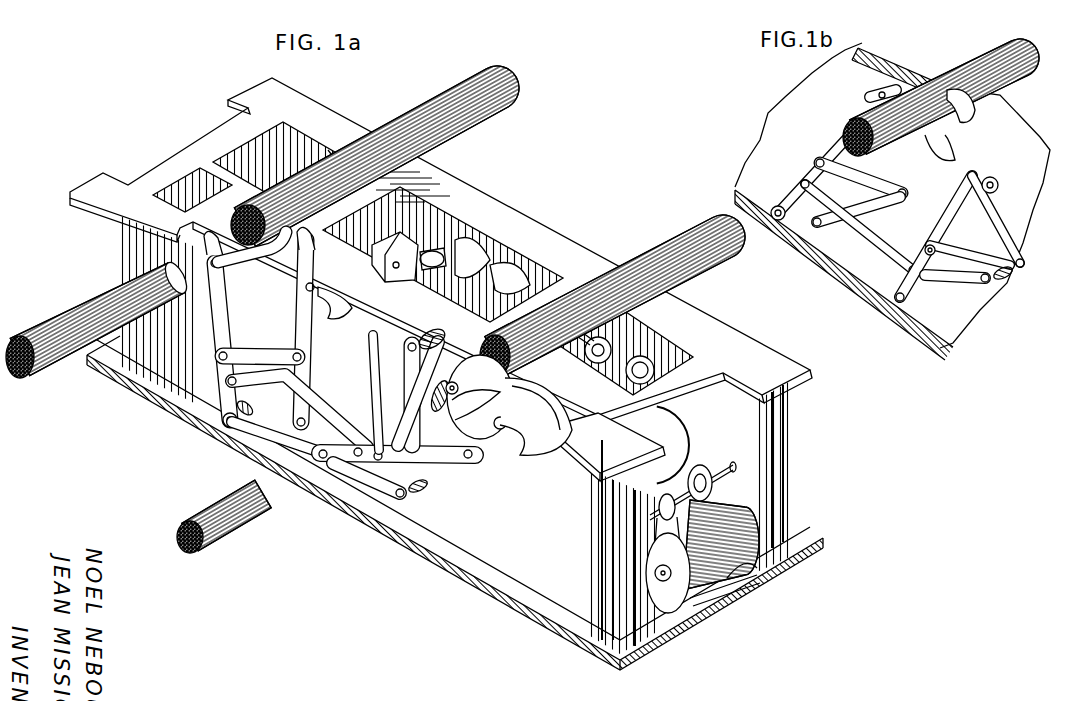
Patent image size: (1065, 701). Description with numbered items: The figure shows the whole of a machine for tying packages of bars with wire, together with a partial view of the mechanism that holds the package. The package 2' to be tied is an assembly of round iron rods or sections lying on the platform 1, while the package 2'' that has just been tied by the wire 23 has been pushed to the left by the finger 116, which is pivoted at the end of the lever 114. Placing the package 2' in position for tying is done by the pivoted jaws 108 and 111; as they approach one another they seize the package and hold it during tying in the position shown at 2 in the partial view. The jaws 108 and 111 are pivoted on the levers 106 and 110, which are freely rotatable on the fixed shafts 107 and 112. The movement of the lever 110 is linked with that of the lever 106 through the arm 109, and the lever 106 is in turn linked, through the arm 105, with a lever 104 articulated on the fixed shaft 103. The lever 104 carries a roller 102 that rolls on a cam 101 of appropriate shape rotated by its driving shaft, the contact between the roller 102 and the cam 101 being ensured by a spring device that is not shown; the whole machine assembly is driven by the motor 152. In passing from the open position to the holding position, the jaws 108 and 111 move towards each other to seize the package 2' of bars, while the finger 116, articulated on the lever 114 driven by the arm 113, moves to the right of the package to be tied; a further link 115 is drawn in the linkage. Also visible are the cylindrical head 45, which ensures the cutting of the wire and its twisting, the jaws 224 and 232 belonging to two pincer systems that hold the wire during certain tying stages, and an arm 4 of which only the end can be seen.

In FIG. 1A, the platform 1 is at (322, 108).
In FIG. 1B, the package 2 is at (941, 97).
In FIG. 1A, the package to be tied 2' is at (612, 272).
In FIG. 1A, the tied package 2'' is at (375, 156).
In FIG. 1A, the arm 4 is at (372, 245).
In FIG. 1A, the wire 23 is at (336, 180).
In FIG. 1A, the cylindrical head 45 is at (438, 255).
In FIG. 1A, the cam 101 is at (520, 458).
In FIG. 1A, the roller 102 is at (452, 382).
In FIG. 1B, the roller 102 is at (1000, 184).
In FIG. 1A, the fixed shaft 103 is at (412, 345).
In FIG. 1A, the lever 104 is at (404, 400).
In FIG. 1B, the lever 104 is at (965, 230).
In FIG. 1A, the arm 105 is at (377, 490).
In FIG. 1B, the arm 105 is at (957, 286).
In FIG. 1A, the lever 106 is at (333, 465).
In FIG. 1B, the lever 106 is at (936, 254).
In FIG. 1A, the fixed shaft 107 is at (382, 440).
In FIG. 1A, the jaw 108 is at (470, 418).
In FIG. 1B, the jaw 108 is at (977, 110).
In FIG. 1A, the arm 109 is at (310, 410).
In FIG. 1B, the arm 109 is at (888, 237).
In FIG. 1A, the lever 110 is at (216, 330).
In FIG. 1B, the lever 110 is at (835, 140).
In FIG. 1A, the jaw 111 is at (238, 272).
In FIG. 1B, the jaw 111 is at (878, 84).
In FIG. 1A, the fixed shaft 112 is at (230, 428).
In FIG. 1B, the fixed shaft 112 is at (777, 205).
In FIG. 1A, the arm 113 is at (262, 352).
In FIG. 1B, the arm 113 is at (888, 182).
In FIG. 1A, the lever 114 is at (314, 333).
In FIG. 1A, the link 115 is at (268, 460).
In FIG. 1B, the link 115 is at (836, 224).
In FIG. 1A, the finger 116 is at (337, 318).
In FIG. 1A, the motor 152 is at (719, 510).
In FIG. 1A, the jaw 224 is at (470, 243).
In FIG. 1A, the jaw 232 is at (502, 262).